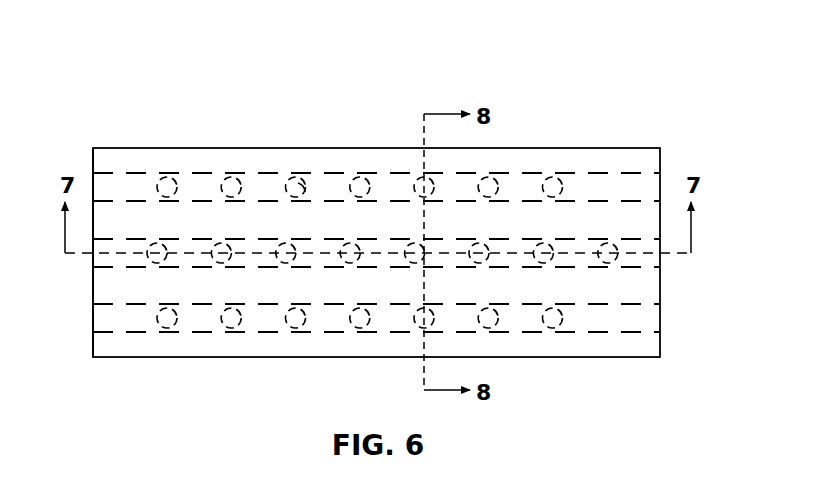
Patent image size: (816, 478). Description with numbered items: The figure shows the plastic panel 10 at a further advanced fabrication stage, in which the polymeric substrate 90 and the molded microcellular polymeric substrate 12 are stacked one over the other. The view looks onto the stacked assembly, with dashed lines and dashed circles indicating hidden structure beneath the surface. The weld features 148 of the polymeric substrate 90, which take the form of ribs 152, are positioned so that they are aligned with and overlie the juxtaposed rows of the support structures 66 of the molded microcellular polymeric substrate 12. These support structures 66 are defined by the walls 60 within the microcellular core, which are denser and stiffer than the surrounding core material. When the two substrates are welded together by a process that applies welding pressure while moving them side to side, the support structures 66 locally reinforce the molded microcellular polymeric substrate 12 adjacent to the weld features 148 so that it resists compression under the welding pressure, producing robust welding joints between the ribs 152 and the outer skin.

The plastic panel 10 is at (87, 47).
The molded microcellular polymeric substrate 12 is at (167, 175).
The walls 60 is at (297, 176).
The support structures 66 is at (306, 190).
The polymeric substrate 90 is at (233, 176).
The weld features 148 is at (143, 172).
The ribs 152 is at (91, 147).